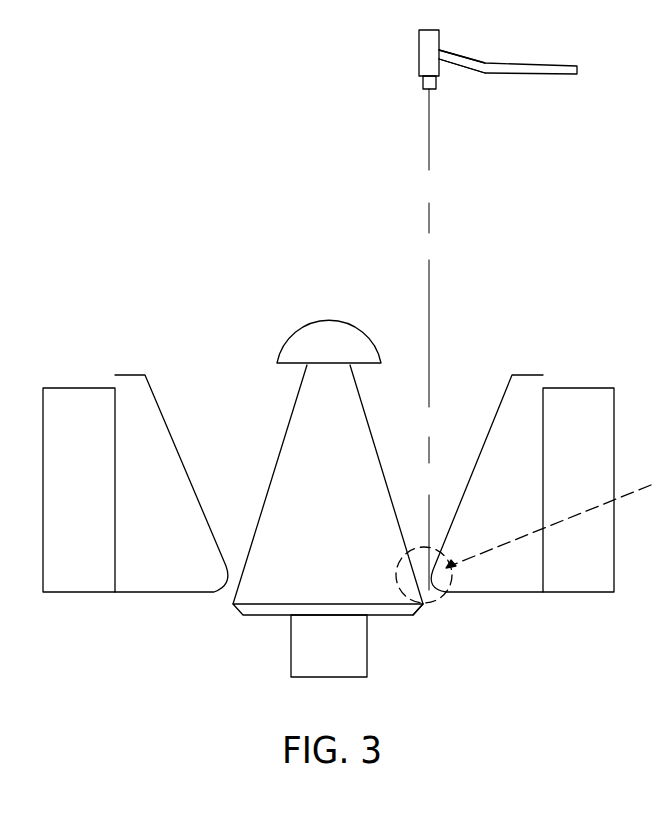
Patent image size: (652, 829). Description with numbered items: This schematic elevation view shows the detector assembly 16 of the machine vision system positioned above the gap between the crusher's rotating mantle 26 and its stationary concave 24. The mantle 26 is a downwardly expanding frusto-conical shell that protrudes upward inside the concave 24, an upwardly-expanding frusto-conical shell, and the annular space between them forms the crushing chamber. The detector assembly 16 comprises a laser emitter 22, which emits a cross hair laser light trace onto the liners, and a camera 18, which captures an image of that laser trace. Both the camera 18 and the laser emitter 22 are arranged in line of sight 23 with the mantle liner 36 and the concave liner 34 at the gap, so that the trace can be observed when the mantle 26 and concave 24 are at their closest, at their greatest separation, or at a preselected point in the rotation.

The detector assembly 16 is at (436, 39).
The camera 18 is at (422, 77).
The laser emitter 22 is at (433, 68).
The line of sight 23 is at (430, 308).
The concave 24 is at (180, 578).
The mantle 26 is at (255, 592).
The concave liner 34 is at (433, 583).
The mantle liner 36 is at (423, 602).